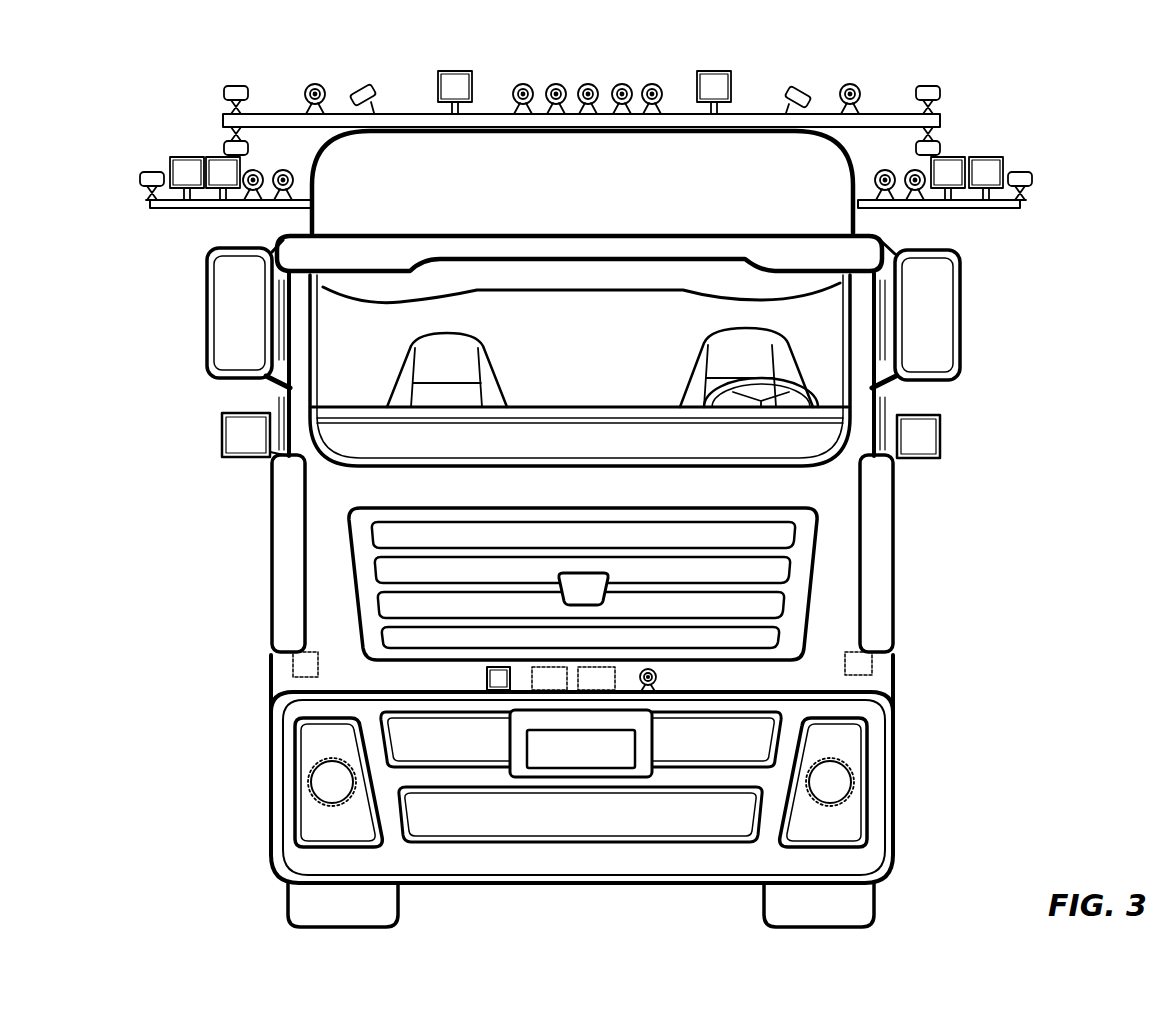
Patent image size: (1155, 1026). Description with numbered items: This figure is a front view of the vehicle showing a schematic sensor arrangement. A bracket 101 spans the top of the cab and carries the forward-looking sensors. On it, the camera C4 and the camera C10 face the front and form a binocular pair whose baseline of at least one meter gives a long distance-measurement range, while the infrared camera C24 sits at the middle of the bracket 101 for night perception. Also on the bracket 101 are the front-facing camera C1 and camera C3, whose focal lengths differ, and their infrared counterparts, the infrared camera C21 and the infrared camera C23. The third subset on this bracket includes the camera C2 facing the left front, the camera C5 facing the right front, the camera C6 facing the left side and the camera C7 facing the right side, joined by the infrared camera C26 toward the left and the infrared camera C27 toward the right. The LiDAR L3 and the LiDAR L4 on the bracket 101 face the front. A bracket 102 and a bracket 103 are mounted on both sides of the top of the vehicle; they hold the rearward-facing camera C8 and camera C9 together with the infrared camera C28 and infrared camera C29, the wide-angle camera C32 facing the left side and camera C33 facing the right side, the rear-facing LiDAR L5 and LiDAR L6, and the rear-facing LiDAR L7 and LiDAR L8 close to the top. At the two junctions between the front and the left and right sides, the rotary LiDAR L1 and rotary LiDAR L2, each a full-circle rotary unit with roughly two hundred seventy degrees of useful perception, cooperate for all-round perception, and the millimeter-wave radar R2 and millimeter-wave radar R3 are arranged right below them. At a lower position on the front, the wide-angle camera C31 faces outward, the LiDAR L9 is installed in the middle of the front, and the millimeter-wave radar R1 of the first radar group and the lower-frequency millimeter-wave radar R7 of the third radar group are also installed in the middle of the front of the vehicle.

The bracket 101 is at (222, 116).
The bracket 102 is at (222, 209).
The bracket 103 is at (942, 209).
The camera C1 is at (622, 84).
The camera C2 is at (797, 88).
The camera C3 is at (556, 84).
The camera C4 is at (850, 82).
The camera C5 is at (365, 86).
The camera C6 is at (940, 140).
The camera C7 is at (224, 141).
The camera C8 is at (879, 172).
The camera C9 is at (289, 171).
The camera C10 is at (315, 83).
The infrared camera C21 is at (652, 84).
The infrared camera C23 is at (521, 84).
The infrared camera C24 is at (588, 84).
The infrared camera C26 is at (930, 86).
The infrared camera C27 is at (236, 86).
The infrared camera C28 is at (911, 171).
The infrared camera C29 is at (255, 170).
The camera C31 is at (658, 680).
The camera C32 is at (1026, 186).
The camera C33 is at (140, 177).
The 360-degree rotary LiDAR L1 is at (945, 418).
The 360-degree rotary LiDAR L2 is at (222, 414).
The LiDAR L3 is at (717, 70).
The LiDAR L4 is at (447, 70).
The LiDAR L5 is at (955, 157).
The LiDAR L6 is at (220, 158).
The LiDAR L7 is at (1000, 157).
The LiDAR L8 is at (187, 158).
The LiDAR L9 is at (485, 669).
The millimeter-wave radar R1 is at (596, 678).
The millimeter-wave radar R2 is at (873, 655).
The millimeter-wave radar R3 is at (292, 663).
The millimeter-wave radar R7 is at (549, 678).